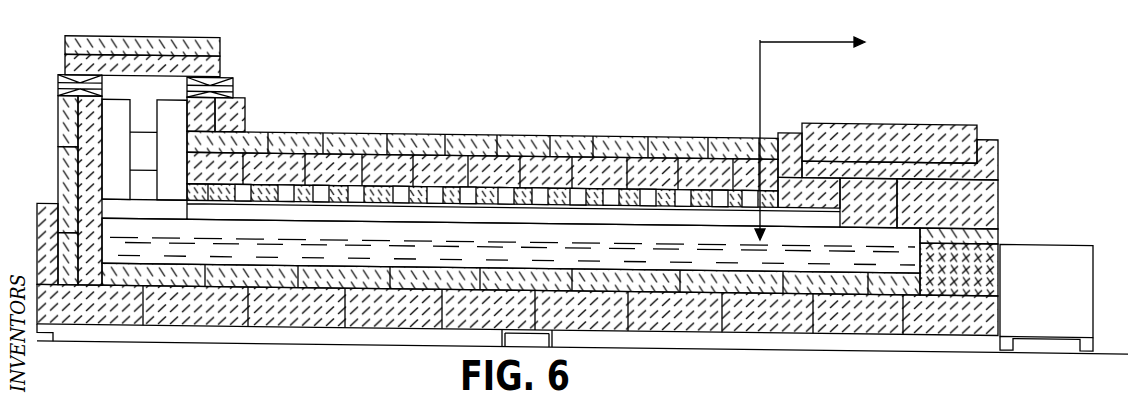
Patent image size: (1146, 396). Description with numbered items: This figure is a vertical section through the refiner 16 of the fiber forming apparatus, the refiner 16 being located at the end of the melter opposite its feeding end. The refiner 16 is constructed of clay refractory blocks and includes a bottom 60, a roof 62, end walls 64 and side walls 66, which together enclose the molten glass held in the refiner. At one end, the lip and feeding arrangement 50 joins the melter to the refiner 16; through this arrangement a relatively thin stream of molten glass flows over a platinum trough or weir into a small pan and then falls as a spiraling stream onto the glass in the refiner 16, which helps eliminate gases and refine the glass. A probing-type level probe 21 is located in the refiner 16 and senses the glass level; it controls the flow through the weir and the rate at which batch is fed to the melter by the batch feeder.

The refiner 16 is at (567, 213).
The level probe 21 is at (760, 52).
The lip and feeding arrangement 50 is at (150, 92).
The bottom 60 is at (765, 330).
The roof 62 is at (606, 136).
The end walls 64 is at (67, 185).
The side walls 66 is at (511, 245).